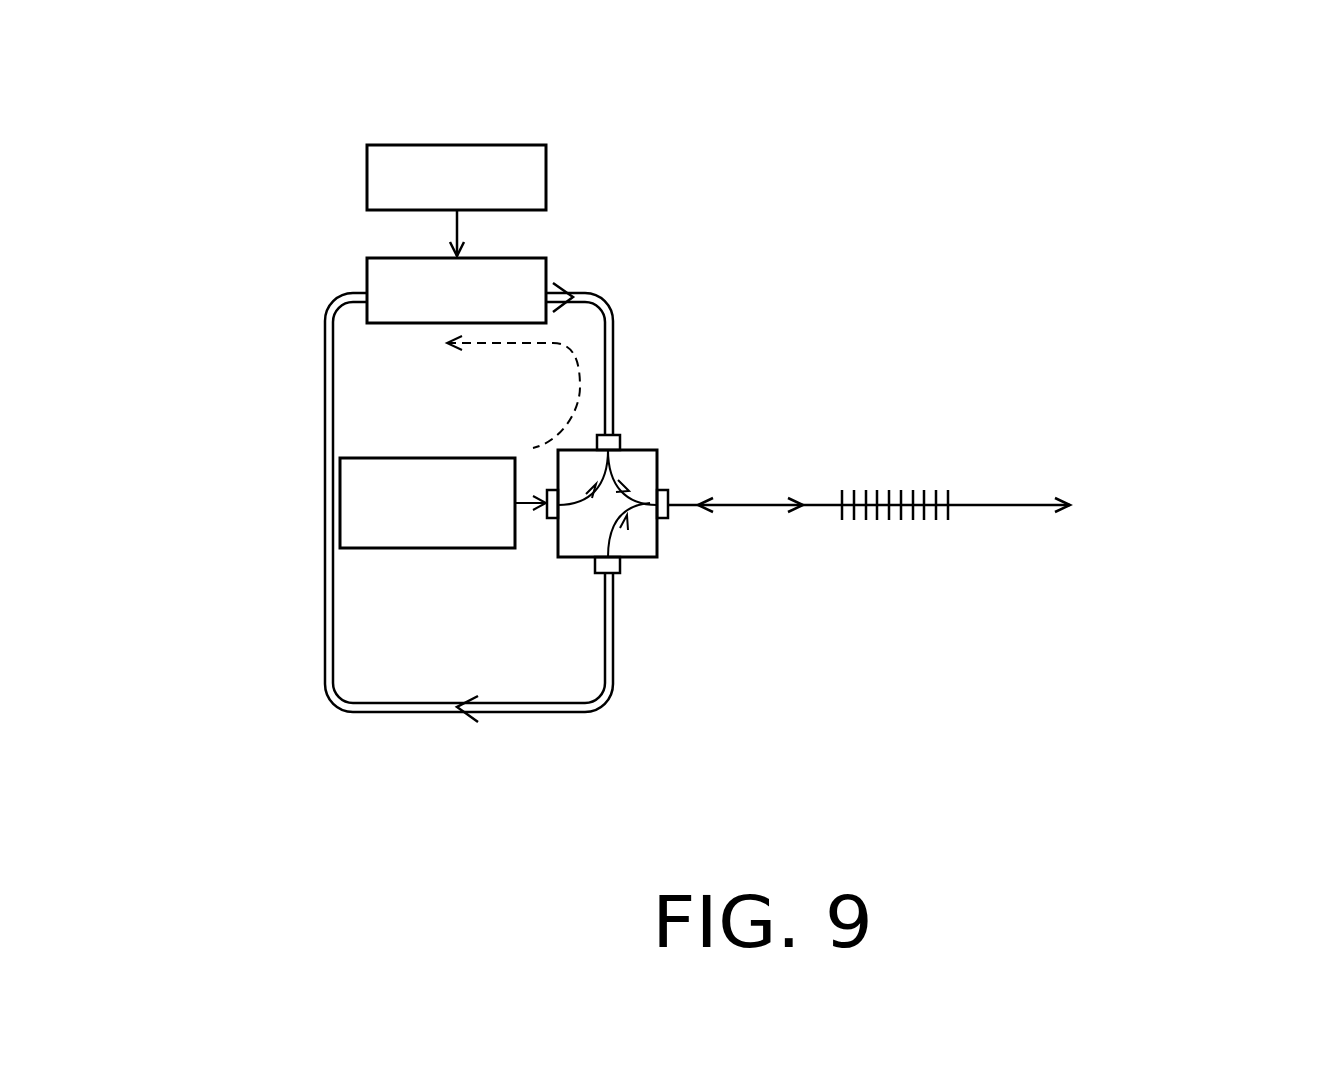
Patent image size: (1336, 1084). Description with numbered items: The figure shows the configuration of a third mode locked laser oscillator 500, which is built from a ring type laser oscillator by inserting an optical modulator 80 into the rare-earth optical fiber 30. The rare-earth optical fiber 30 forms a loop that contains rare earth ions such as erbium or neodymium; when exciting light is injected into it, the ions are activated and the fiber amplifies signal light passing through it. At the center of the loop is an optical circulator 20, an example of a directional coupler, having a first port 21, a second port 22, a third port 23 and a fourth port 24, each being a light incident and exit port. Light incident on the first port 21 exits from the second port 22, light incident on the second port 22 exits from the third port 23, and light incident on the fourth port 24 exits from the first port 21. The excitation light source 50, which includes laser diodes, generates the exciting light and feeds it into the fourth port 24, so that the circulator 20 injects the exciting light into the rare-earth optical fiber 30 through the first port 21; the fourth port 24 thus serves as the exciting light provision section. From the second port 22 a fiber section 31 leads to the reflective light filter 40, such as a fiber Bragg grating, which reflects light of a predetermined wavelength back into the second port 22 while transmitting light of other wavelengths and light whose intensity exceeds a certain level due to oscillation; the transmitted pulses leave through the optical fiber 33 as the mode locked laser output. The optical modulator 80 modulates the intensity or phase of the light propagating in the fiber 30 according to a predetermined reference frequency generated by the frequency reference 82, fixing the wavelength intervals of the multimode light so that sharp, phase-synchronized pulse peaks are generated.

The third mode locked laser oscillator 500 is at (218, 77).
The frequency reference 82 is at (546, 180).
The optical modulator 80 is at (530, 258).
The rare-earth optical fiber 30 is at (325, 503).
The excitation light source 50 is at (427, 458).
The optical circulator 20 is at (590, 505).
The first port 21 is at (615, 435).
The second port 22 is at (668, 490).
The third port 23 is at (620, 575).
The fourth port 24 is at (547, 518).
The optical fiber 31 is at (757, 505).
The reflective light filter 40 is at (905, 490).
The optical fiber 33 is at (998, 505).